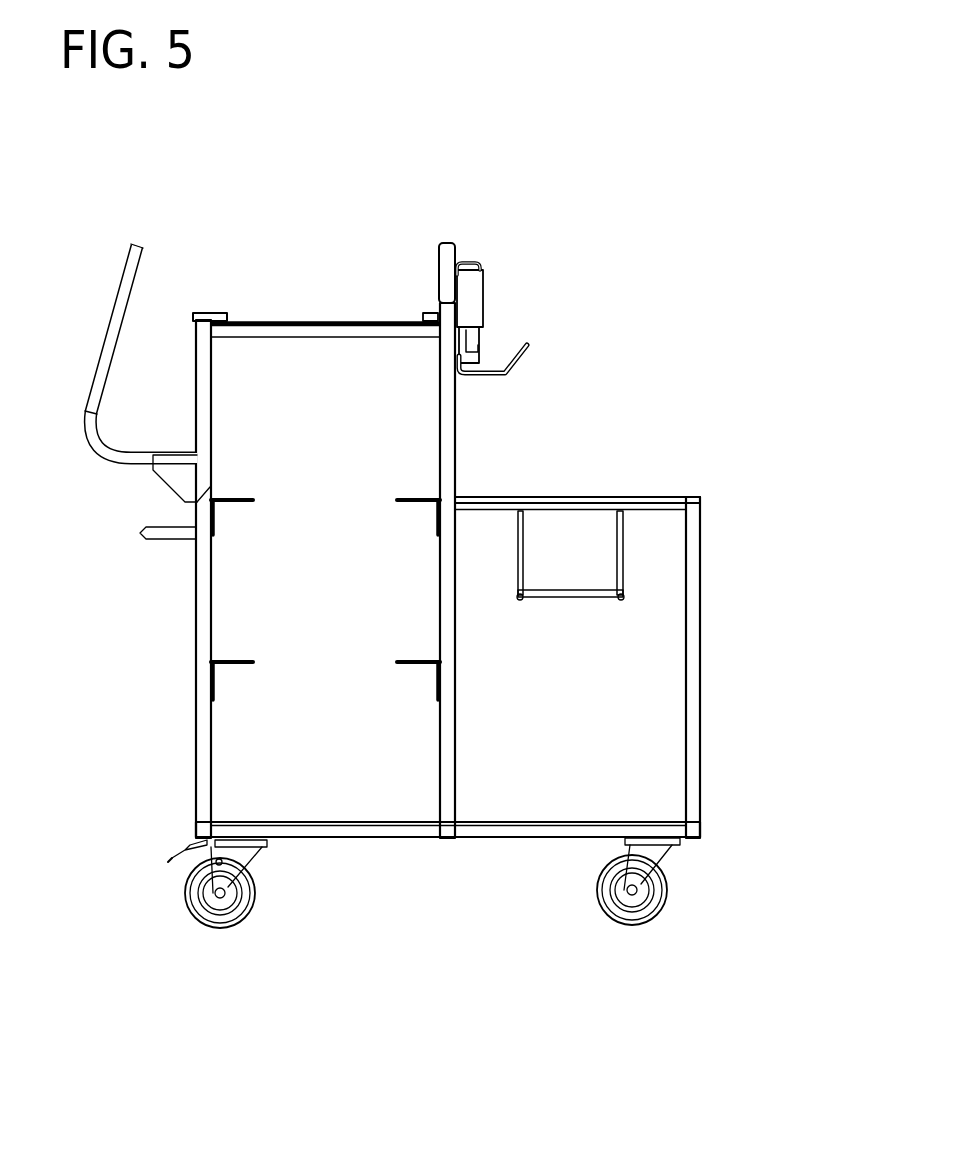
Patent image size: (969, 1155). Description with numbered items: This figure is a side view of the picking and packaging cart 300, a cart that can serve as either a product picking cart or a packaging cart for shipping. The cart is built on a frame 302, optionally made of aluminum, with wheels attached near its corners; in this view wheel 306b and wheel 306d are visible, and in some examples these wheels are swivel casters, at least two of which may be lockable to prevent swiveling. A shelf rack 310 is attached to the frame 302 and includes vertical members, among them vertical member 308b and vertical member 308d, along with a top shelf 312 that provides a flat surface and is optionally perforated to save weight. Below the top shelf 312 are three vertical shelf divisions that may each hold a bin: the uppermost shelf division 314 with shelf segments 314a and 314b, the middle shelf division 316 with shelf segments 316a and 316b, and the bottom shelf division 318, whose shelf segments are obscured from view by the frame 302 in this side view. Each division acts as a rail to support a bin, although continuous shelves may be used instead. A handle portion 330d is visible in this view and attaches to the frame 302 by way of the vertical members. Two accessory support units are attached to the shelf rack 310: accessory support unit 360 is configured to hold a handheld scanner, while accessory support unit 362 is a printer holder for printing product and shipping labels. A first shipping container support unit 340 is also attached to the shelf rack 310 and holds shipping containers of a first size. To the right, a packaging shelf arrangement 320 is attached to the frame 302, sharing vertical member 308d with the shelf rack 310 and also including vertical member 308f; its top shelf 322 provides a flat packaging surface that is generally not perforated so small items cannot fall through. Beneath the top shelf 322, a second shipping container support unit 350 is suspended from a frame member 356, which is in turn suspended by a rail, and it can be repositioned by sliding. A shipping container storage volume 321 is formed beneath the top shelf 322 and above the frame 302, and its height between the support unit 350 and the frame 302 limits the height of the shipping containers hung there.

The picking and packaging cart 300 is at (435, 539).
The frame 302 is at (448, 858).
The wheel 306b is at (211, 909).
The wheel 306d is at (622, 908).
The vertical member 308b is at (157, 575).
The vertical member 308d is at (495, 540).
The vertical member 308f is at (754, 667).
The shelf rack 310 is at (321, 466).
The top shelf 312 is at (325, 287).
The uppermost shelf division 314 is at (325, 445).
The shelf segment 314a is at (260, 490).
The shelf segment 314b is at (393, 490).
The middle shelf division 316 is at (325, 611).
The shelf segment 316a is at (259, 654).
The shelf segment 316b is at (395, 654).
The bottom shelf division 318 is at (325, 752).
The packaging shelf arrangement 320 is at (422, 596).
The shipping container storage volume 321 is at (570, 684).
The top shelf 322 is at (625, 480).
The handle portion 330d is at (129, 358).
The first shipping container support unit 340 is at (144, 570).
The second shipping container support unit 350 is at (579, 589).
The frame member 356 is at (478, 580).
The accessory support unit 360 is at (503, 289).
The accessory support unit 362 is at (524, 331).